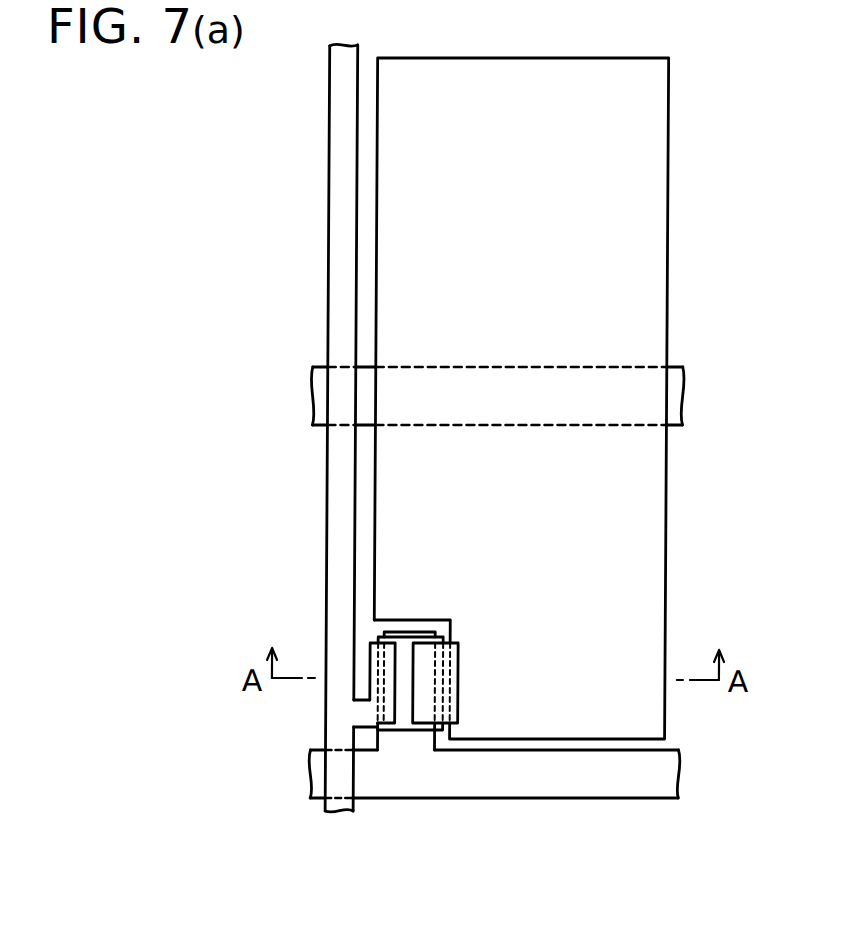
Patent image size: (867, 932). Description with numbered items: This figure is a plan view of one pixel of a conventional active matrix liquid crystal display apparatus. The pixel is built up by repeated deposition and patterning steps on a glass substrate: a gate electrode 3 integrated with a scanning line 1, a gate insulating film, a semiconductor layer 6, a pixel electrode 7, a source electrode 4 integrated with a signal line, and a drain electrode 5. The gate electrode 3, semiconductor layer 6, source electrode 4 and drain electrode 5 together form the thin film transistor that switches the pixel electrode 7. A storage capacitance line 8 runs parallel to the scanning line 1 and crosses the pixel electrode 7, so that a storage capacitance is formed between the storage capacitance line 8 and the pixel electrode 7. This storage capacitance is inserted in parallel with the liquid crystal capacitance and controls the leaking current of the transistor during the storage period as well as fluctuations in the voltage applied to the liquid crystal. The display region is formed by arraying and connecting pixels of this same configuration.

The scanning line 1 is at (585, 780).
The gate electrode 3 is at (412, 632).
The source electrode 4 is at (394, 665).
The drain electrode 5 is at (426, 705).
The semiconductor layer 6 is at (409, 720).
The pixel electrode 7 is at (641, 185).
The storage capacitance line 8 is at (675, 390).